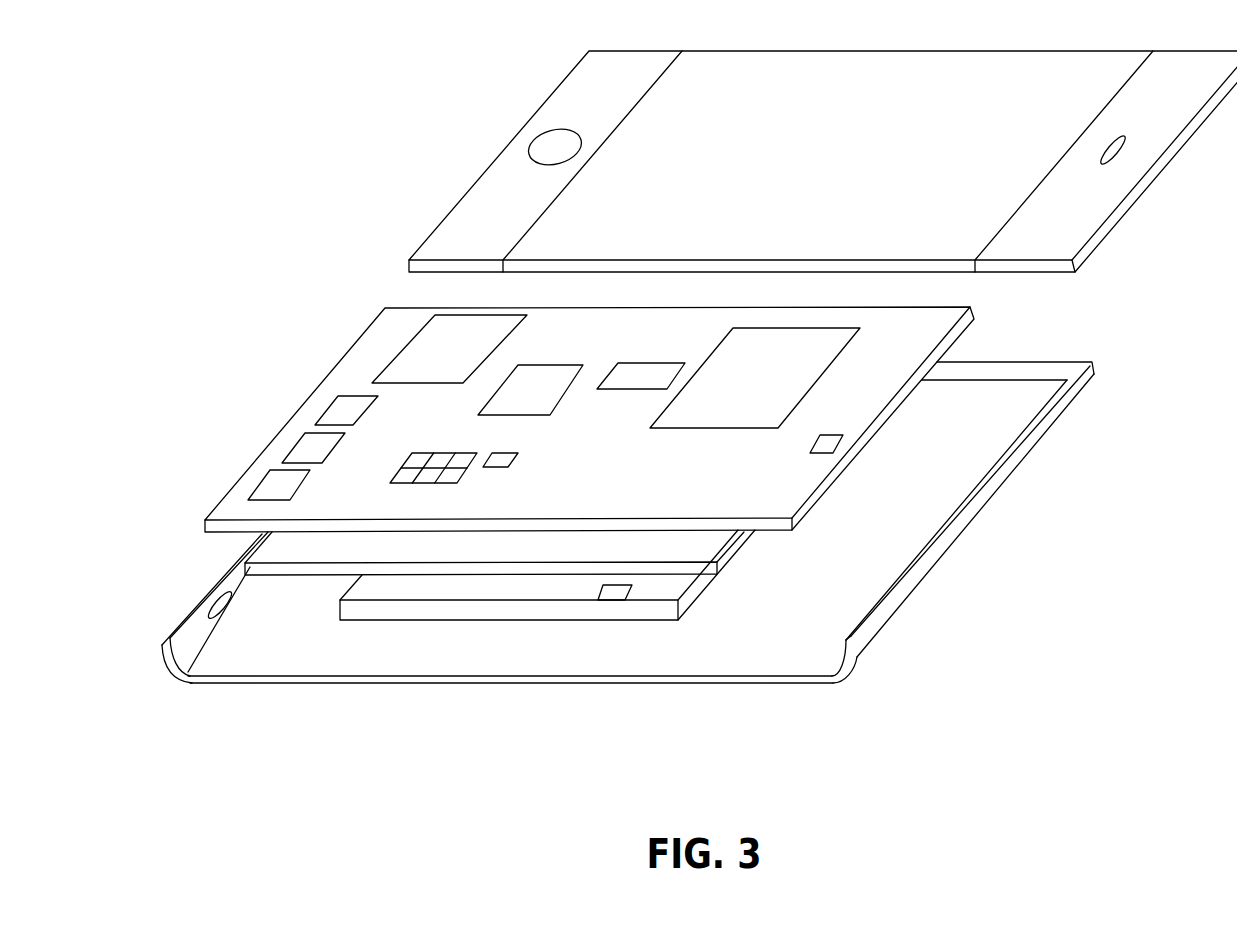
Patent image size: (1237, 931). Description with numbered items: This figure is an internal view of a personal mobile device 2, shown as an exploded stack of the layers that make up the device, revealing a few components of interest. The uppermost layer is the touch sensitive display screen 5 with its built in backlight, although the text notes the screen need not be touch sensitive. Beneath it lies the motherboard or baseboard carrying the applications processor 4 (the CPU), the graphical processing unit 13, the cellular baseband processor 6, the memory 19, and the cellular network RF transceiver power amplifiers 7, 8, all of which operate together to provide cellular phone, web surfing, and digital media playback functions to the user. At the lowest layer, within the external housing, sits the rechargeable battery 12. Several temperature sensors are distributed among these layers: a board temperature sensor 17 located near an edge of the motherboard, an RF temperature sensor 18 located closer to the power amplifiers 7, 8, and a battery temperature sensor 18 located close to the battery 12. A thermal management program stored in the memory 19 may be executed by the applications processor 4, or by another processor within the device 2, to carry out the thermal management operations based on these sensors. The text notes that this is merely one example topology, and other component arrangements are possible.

The personal mobile device 2 is at (324, 202).
The applications processor 4 is at (697, 431).
The touch sensitive display screen 5 is at (948, 245).
The cellular baseband processor 6 is at (548, 360).
The cellular network RF transceiver power amplifier 7 is at (420, 445).
The cellular network RF transceiver power amplifier 8 is at (293, 509).
The rechargeable battery 12 is at (688, 598).
The graphical processing unit 13 is at (407, 343).
The board temperature sensor 17 is at (837, 442).
The RF temperature sensor 18 is at (515, 457).
The memory 19 is at (642, 363).